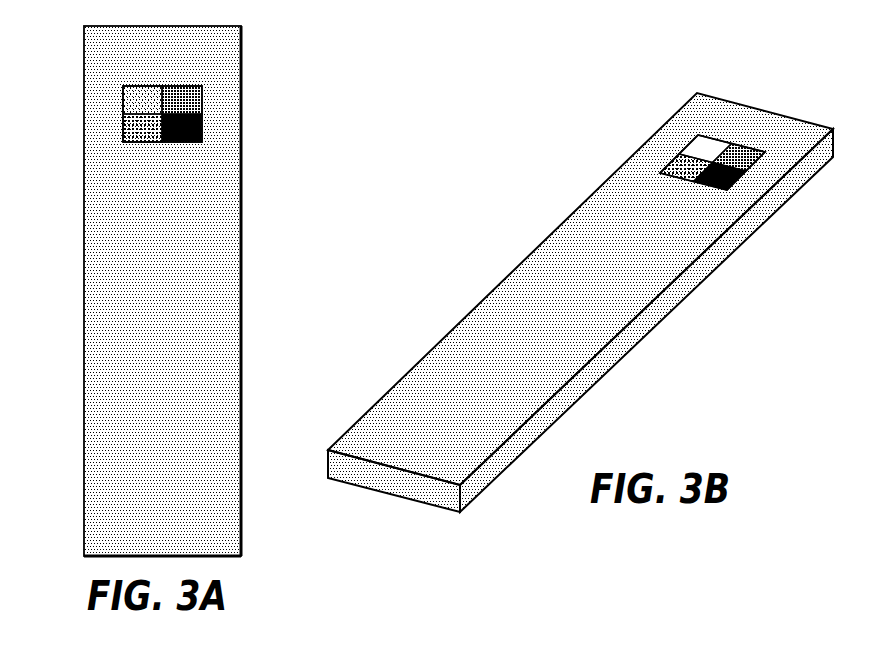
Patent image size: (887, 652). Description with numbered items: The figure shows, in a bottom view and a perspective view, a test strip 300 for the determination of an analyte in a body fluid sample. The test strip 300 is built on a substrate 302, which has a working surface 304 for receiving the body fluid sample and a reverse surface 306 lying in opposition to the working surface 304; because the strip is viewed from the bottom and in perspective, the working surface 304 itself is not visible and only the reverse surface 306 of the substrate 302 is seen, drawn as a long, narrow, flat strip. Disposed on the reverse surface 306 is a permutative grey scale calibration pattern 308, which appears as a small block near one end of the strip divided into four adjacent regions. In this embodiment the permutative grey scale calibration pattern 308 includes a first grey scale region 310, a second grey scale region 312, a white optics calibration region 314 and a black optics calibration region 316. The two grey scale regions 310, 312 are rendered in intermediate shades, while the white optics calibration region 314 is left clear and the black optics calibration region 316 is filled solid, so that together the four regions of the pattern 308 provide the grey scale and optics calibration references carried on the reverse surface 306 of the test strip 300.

In FIG. 3A, the test strip 300 is at (179, 295).
In FIG. 3B, the test strip 300 is at (580, 287).
In FIG. 3A, the substrate 302 is at (236, 560).
In FIG. 3B, the substrate 302 is at (428, 493).
In FIG. 3B, the working surface 304 is at (631, 355).
In FIG. 3A, the reverse surface 306 is at (236, 318).
In FIG. 3B, the reverse surface 306 is at (505, 300).
In FIG. 3A, the permutative grey scale calibration pattern 308 is at (167, 142).
In FIG. 3B, the permutative grey scale calibration pattern 308 is at (649, 131).
In FIG. 3A, the first grey scale region 310 is at (192, 95).
In FIG. 3B, the first grey scale region 310 is at (749, 152).
In FIG. 3A, the second grey scale region 312 is at (131, 130).
In FIG. 3B, the second grey scale region 312 is at (674, 172).
In FIG. 3A, the white optics calibration region 314 is at (131, 99).
In FIG. 3B, the white optics calibration region 314 is at (702, 150).
In FIG. 3A, the black optics calibration region 316 is at (203, 125).
In FIG. 3B, the black optics calibration region 316 is at (720, 160).